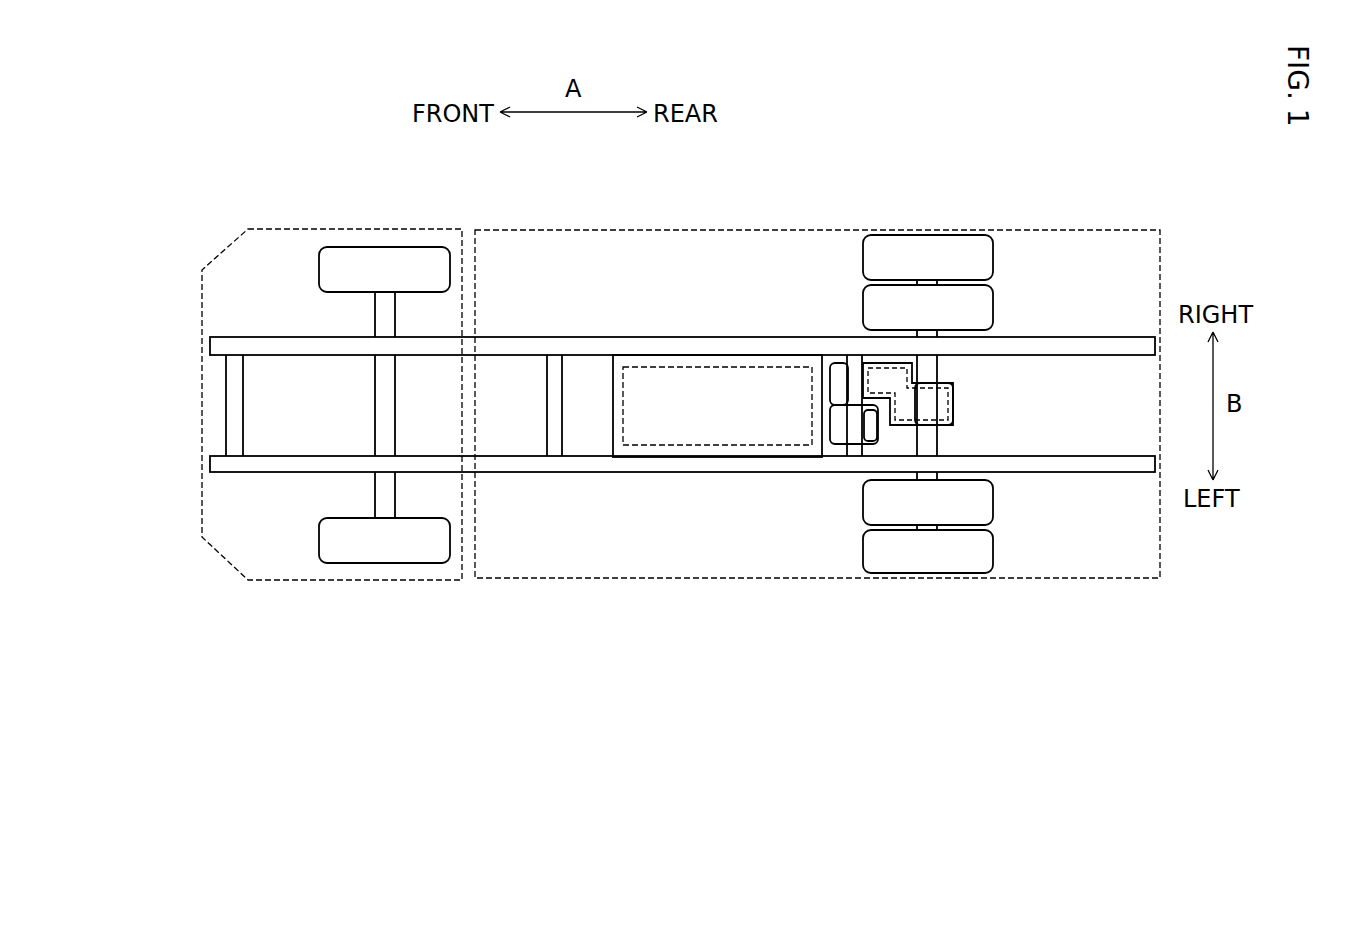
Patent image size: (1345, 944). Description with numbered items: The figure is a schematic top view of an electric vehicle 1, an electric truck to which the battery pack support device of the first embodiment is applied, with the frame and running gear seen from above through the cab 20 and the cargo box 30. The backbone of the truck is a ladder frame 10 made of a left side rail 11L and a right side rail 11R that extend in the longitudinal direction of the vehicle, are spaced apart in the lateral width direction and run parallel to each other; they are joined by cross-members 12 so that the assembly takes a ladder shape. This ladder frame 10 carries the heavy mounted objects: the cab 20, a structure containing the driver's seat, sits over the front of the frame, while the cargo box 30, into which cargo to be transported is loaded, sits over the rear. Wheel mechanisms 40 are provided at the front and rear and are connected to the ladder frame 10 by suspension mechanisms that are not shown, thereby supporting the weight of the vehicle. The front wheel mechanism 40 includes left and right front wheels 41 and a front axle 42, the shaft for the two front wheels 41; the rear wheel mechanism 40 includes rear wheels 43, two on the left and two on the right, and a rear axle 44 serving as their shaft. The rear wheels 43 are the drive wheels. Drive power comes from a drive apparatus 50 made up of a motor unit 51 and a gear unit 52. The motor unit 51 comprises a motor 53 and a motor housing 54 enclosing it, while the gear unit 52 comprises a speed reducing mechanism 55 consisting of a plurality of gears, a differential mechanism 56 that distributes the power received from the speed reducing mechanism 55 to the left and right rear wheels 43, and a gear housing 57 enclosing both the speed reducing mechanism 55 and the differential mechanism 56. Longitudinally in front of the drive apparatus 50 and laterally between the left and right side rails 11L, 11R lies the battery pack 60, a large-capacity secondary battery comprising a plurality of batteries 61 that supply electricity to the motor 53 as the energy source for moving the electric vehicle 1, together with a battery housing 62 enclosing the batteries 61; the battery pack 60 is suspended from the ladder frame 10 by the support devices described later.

The electric vehicle 1 is at (283, 163).
The ladder frame 10 is at (131, 343).
The right side rail 11R is at (212, 347).
The left side rail 11L is at (212, 466).
The cross-member 12 is at (228, 418).
The cab 20 is at (277, 582).
The cargo box 30 is at (505, 583).
The wheel mechanism 40 is at (425, 628).
The front wheel 41 is at (343, 262).
The front axle 42 is at (385, 513).
The rear wheel 43 is at (963, 300).
The rear axle 44 is at (928, 482).
The drive apparatus 50 is at (845, 143).
The motor unit 51 is at (777, 180).
The gear unit 52 is at (897, 180).
The motor 53 is at (830, 412).
The motor housing 54 is at (830, 428).
The speed reducing mechanism 55 is at (838, 380).
The differential mechanism 56 is at (950, 388).
The gear housing 57 is at (867, 368).
The battery pack 60 is at (650, 180).
The battery 61 is at (645, 383).
The battery housing 62 is at (680, 367).